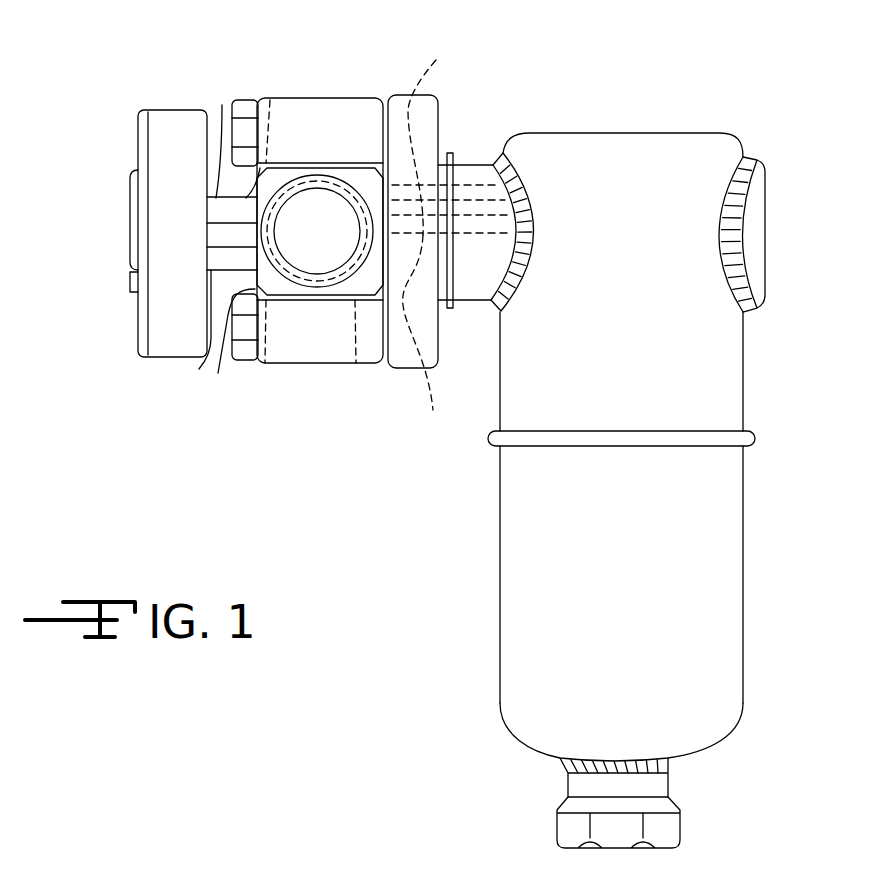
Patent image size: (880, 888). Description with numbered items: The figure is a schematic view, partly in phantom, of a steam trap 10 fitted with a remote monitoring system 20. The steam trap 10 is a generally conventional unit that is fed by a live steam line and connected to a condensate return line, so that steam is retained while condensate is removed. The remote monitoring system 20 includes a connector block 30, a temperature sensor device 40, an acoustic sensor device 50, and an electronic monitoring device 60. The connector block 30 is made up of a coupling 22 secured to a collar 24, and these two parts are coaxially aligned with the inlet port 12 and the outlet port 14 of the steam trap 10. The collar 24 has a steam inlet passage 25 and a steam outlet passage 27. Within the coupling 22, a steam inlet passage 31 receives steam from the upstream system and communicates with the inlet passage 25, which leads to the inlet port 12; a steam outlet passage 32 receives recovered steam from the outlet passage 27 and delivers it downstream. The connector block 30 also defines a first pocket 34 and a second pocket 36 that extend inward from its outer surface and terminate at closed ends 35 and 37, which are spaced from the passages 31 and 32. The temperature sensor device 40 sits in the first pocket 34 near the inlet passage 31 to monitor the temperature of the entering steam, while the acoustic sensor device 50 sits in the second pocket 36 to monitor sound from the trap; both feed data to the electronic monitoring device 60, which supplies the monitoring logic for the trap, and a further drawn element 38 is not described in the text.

The steam trap 10 is at (499, 620).
The inlet port 12 is at (493, 137).
The outlet port 14 is at (500, 153).
The remote monitoring system 20 is at (333, 439).
The coupling 22 is at (340, 98).
The collar 24 is at (440, 108).
The steam inlet passage 25 is at (424, 338).
The steam outlet passage 27 is at (437, 138).
The connector block 30 is at (315, 217).
The steam inlet passage 31 is at (356, 363).
The steam outlet passage 32 is at (322, 266).
The first pocket 34 is at (268, 100).
The closed end 35 is at (280, 220).
The second pocket 36 is at (265, 363).
The closed end 37 is at (280, 222).
The lower clip arm 38 is at (227, 347).
The temperature sensor device 40 is at (222, 105).
The acoustic sensor device 50 is at (199, 369).
The electronic monitoring device 60 is at (135, 158).